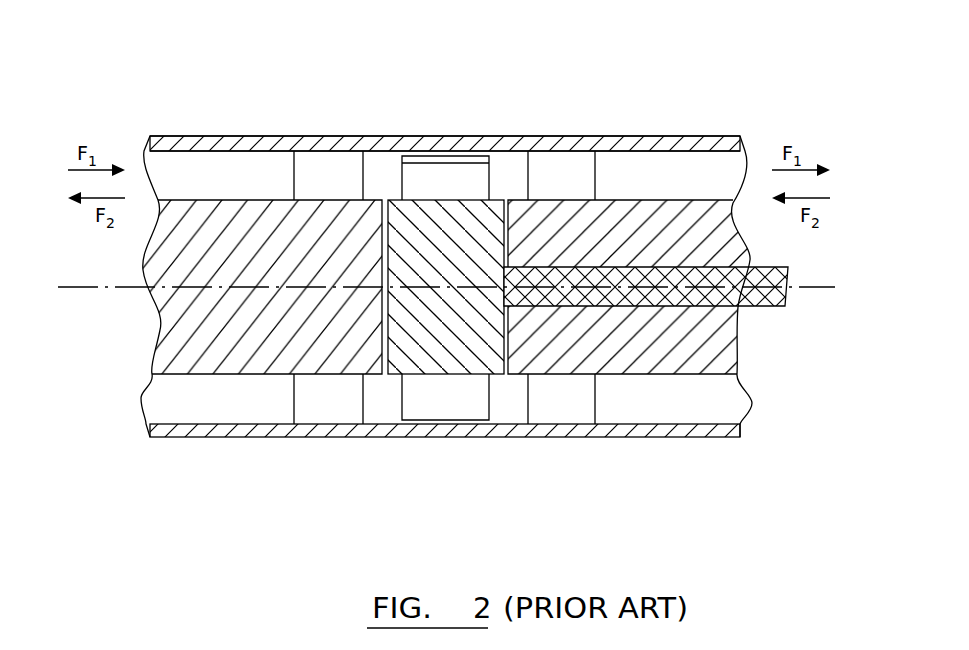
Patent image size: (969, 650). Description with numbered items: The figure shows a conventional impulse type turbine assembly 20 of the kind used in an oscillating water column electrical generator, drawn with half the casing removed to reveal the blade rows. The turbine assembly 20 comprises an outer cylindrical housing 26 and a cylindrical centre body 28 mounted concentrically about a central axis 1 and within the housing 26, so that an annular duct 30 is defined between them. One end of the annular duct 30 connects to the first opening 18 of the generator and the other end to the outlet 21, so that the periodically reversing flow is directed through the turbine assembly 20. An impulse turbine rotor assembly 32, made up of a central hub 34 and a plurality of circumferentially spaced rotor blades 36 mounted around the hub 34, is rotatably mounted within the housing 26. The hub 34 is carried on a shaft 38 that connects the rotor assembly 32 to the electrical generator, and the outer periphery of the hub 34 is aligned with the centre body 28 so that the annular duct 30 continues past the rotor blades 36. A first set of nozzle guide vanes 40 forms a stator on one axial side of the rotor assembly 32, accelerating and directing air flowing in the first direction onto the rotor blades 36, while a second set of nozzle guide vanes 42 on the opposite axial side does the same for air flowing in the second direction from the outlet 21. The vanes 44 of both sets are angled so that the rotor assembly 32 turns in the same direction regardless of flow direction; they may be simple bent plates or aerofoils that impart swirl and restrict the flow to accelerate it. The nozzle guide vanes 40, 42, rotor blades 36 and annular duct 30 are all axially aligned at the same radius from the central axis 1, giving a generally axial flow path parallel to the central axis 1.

The central axis 1 is at (817, 288).
The first opening 18 is at (133, 405).
The turbine assembly 20 is at (257, 122).
The outlet 21 is at (760, 403).
The outer cylindrical housing 26 is at (368, 140).
The cylindrical centre body 28 is at (175, 320).
The annular duct 30 is at (195, 168).
The impulse turbine rotor assembly 32 is at (447, 160).
The central hub 34 is at (386, 378).
The rotor blades 36 is at (448, 400).
The shaft 38 is at (755, 302).
The first set of nozzle guide vanes 40 is at (328, 175).
The second set of nozzle guide vanes 42 is at (565, 172).
The vanes 44 is at (325, 405).